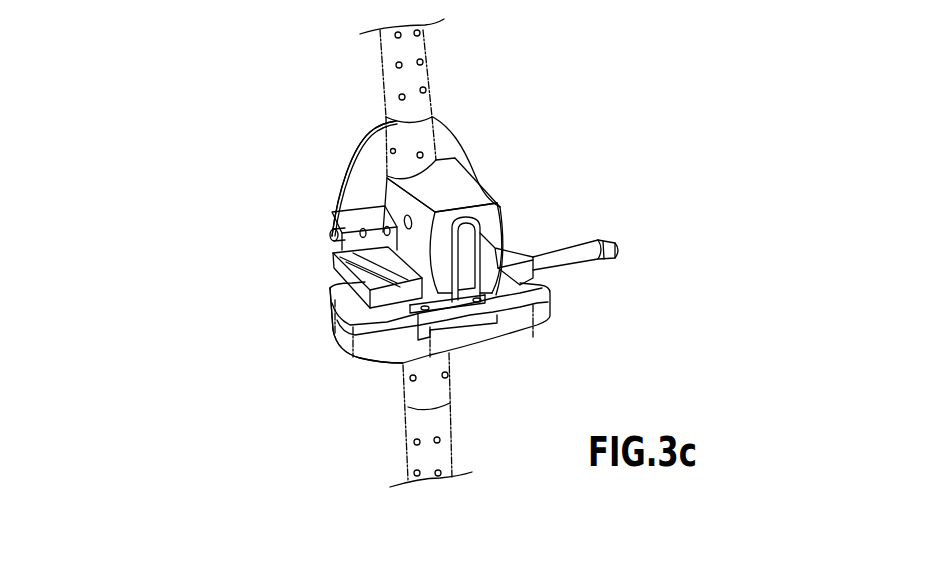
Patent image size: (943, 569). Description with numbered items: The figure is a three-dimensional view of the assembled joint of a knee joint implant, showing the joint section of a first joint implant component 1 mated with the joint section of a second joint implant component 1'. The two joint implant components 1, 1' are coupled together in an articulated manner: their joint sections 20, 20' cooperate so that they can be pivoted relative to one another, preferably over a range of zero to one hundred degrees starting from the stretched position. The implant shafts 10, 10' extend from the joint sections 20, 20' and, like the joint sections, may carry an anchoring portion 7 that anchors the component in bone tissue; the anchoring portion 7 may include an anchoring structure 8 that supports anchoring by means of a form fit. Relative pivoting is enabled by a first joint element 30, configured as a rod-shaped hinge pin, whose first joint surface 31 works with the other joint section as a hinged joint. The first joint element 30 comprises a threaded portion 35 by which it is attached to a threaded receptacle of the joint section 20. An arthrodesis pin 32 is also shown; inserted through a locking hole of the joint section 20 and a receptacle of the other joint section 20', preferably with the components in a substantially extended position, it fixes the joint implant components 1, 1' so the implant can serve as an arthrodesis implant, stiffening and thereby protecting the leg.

The joint implant component 1 is at (303, 156).
The joint implant component 1' is at (233, 363).
The anchoring portion 7 is at (510, 243).
The anchoring structure 8 is at (373, 268).
The implant shaft 10 is at (443, 90).
The implant shaft 10' is at (378, 420).
The joint section 20 is at (495, 202).
The joint section 20' is at (387, 349).
The first joint element 30 is at (331, 236).
The first joint surface 31 is at (362, 231).
The arthrodesis pin 32 is at (577, 257).
The threaded portion 35 is at (387, 228).